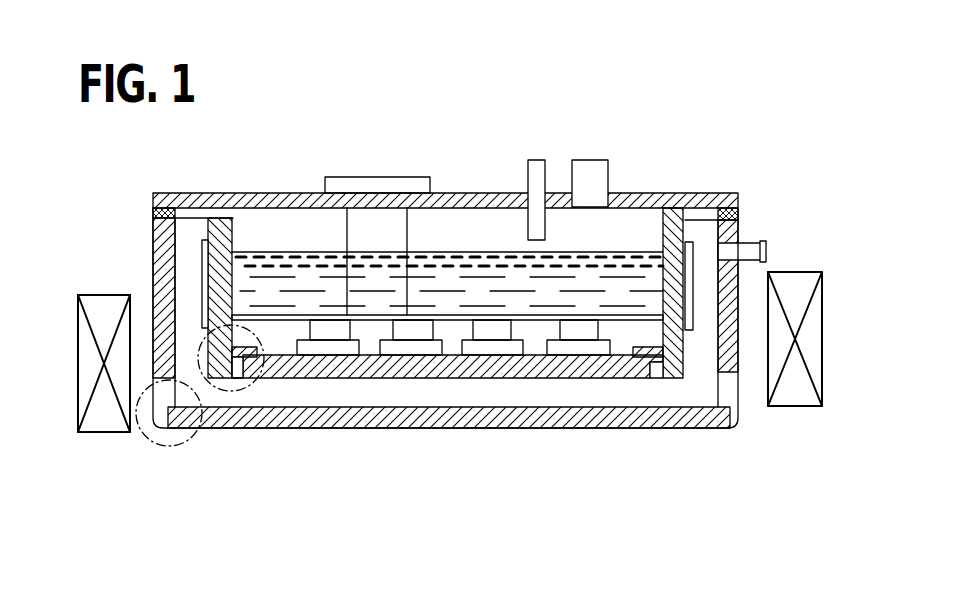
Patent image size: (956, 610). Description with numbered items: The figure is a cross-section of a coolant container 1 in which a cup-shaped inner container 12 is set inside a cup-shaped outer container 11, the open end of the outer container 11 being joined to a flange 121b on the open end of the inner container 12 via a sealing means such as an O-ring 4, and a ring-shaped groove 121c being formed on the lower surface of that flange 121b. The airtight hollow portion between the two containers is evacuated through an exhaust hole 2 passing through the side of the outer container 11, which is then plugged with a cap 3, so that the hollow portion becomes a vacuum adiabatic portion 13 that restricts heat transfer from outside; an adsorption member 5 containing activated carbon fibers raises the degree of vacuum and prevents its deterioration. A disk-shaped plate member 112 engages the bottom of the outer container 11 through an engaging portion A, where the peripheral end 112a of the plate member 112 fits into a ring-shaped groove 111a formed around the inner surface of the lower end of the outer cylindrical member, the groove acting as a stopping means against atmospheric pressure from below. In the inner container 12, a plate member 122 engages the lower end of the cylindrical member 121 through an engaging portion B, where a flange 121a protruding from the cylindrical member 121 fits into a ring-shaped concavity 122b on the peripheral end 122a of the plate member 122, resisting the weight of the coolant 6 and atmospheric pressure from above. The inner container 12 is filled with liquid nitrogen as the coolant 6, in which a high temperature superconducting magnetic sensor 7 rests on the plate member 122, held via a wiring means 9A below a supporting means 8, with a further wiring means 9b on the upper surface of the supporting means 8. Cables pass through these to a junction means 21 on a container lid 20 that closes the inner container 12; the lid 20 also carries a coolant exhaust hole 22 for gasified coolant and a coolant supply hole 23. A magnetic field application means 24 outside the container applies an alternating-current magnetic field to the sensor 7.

The coolant container 1 is at (462, 443).
The exhaust hole 2 is at (763, 241).
The cap 3 is at (767, 250).
The O-ring 4 is at (738, 198).
The adsorption member 5 is at (692, 243).
The coolant 6 is at (646, 265).
The high temperature superconducting magnetic sensor 7 is at (352, 350).
The supporting means 8 is at (293, 320).
The wiring means 9A is at (322, 330).
The wiring means 9b is at (353, 228).
The outer container 11 is at (852, 516).
The inner container 12 is at (700, 516).
The vacuum adiabatic portion 13 is at (547, 393).
The container lid 20 is at (719, 208).
The junction means 21 is at (343, 177).
The coolant exhaust hole 22 is at (592, 160).
The coolant supply hole 23 is at (538, 160).
The magnetic field application means 24 is at (102, 295).
The ring-shaped groove 111a is at (180, 440).
The plate member 112 is at (698, 428).
The peripheral end 112a is at (152, 432).
The cylindrical member 121 is at (678, 342).
The flange 121a is at (228, 372).
The flange 121b is at (188, 193).
The ring-shaped groove 121c is at (160, 224).
The plate member 122 is at (615, 378).
The peripheral end 122a is at (235, 345).
The ring-shaped concavity 122b is at (255, 378).
The engaging portion A is at (145, 442).
The engaging portion B is at (214, 390).